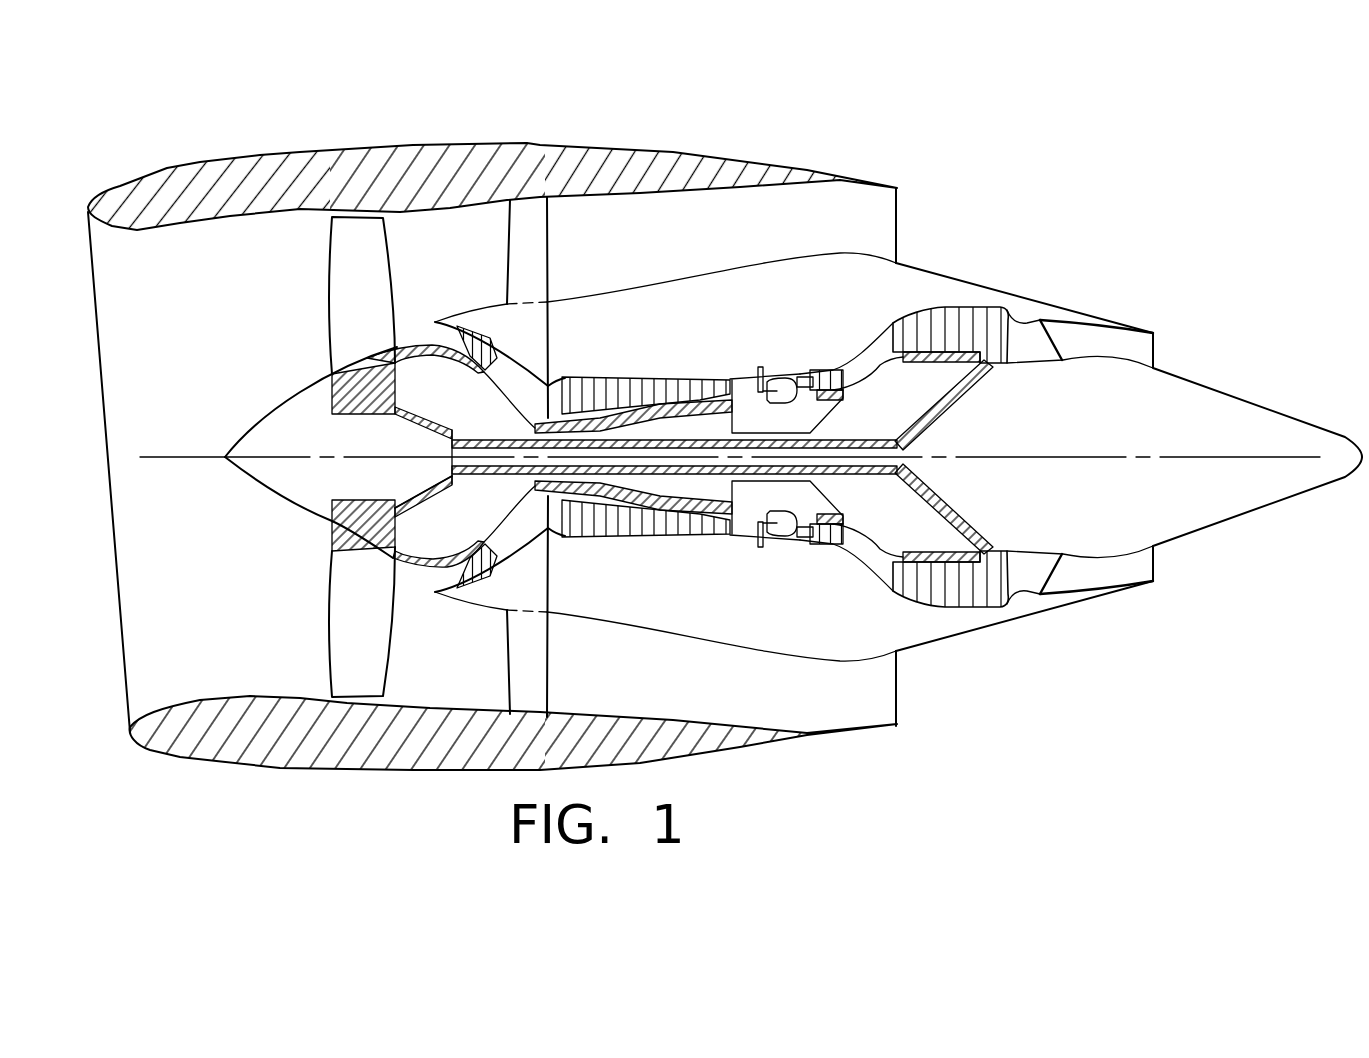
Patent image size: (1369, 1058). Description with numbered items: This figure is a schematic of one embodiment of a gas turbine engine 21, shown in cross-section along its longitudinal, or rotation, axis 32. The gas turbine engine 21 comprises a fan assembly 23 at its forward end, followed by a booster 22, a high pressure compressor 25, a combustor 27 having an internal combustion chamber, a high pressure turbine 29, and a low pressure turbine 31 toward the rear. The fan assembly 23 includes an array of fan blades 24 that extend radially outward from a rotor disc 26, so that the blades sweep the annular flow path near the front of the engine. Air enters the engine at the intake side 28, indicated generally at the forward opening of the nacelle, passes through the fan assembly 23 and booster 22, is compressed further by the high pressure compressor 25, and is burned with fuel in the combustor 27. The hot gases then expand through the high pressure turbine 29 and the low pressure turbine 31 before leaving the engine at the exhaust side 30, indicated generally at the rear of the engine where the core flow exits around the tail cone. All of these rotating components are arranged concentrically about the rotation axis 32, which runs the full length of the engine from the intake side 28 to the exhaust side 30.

The gas turbine engine 21 is at (397, 131).
The booster 22 is at (475, 335).
The fan assembly 23 is at (360, 622).
The fan blades 24 is at (350, 305).
The high pressure compressor 25 is at (568, 387).
The rotor disc 26 is at (365, 538).
The combustor 27 is at (782, 387).
The intake side 28 is at (68, 248).
The high pressure turbine 29 is at (866, 560).
The exhaust side 30 is at (1060, 176).
The low pressure turbine 31 is at (928, 318).
The rotation axis 32 is at (207, 450).